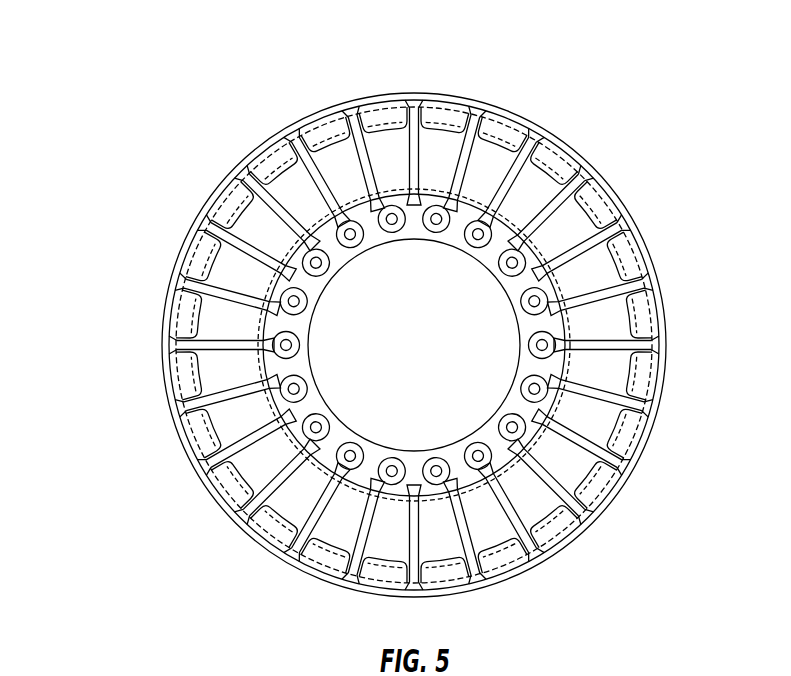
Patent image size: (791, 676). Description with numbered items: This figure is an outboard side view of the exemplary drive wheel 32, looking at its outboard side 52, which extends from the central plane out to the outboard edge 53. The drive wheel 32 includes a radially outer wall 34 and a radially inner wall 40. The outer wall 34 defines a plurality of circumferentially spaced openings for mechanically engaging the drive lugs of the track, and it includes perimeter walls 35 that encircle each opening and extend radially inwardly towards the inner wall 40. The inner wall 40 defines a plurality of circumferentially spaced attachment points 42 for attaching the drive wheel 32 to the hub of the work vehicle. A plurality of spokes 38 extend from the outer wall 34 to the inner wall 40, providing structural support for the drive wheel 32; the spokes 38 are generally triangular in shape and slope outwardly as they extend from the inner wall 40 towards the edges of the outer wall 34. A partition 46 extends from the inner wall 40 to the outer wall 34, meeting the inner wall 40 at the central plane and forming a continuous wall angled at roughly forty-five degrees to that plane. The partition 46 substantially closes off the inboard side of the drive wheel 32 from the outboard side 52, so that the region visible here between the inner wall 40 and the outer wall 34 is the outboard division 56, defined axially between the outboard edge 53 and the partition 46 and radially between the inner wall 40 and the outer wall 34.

The drive wheel 32 is at (112, 84).
The radially outer wall 34 is at (380, 98).
The perimeter walls 35 is at (322, 134).
The spokes 38 is at (228, 293).
The radially inner wall 40 is at (466, 215).
The attachment points 42 is at (493, 228).
The partition 46 is at (575, 227).
The outboard side 52 is at (614, 328).
The outboard edge 53 is at (617, 495).
The outboard division 56 is at (602, 426).